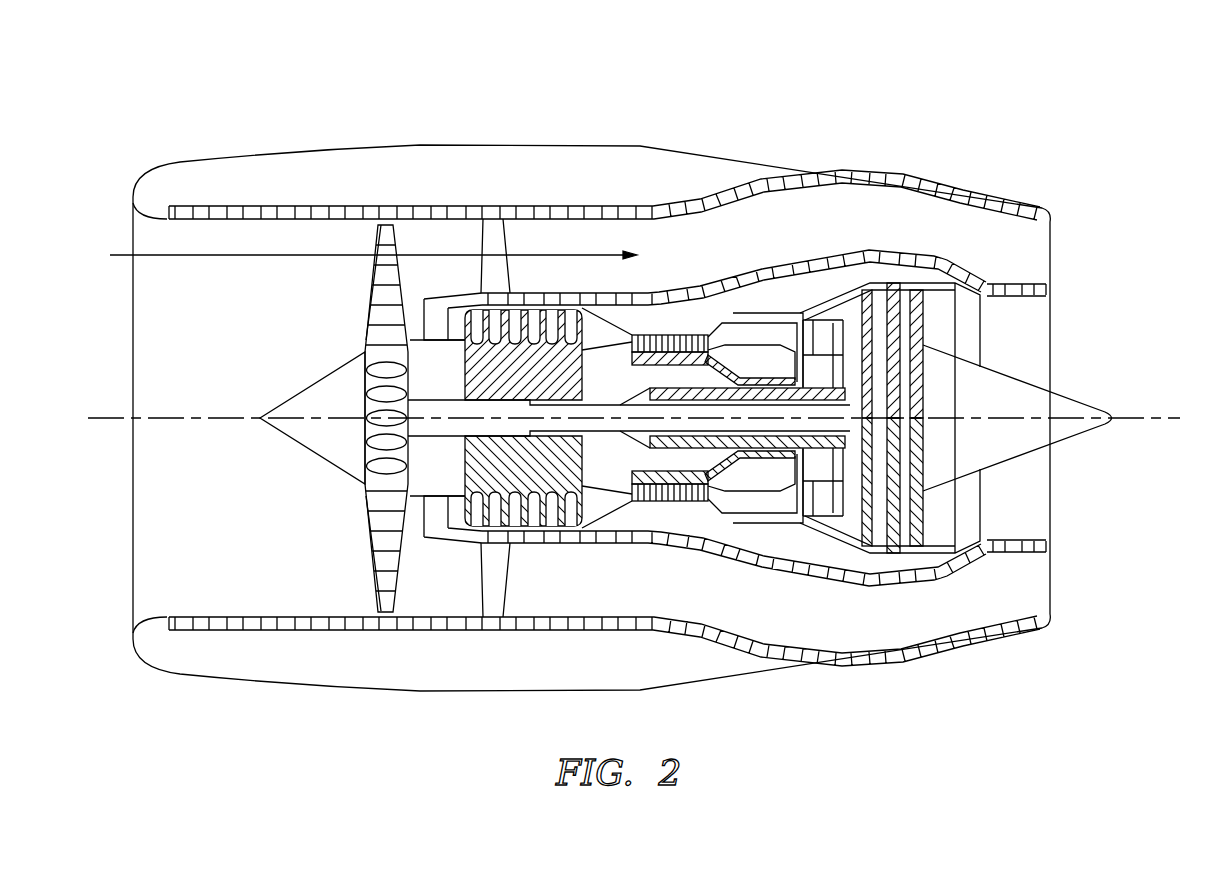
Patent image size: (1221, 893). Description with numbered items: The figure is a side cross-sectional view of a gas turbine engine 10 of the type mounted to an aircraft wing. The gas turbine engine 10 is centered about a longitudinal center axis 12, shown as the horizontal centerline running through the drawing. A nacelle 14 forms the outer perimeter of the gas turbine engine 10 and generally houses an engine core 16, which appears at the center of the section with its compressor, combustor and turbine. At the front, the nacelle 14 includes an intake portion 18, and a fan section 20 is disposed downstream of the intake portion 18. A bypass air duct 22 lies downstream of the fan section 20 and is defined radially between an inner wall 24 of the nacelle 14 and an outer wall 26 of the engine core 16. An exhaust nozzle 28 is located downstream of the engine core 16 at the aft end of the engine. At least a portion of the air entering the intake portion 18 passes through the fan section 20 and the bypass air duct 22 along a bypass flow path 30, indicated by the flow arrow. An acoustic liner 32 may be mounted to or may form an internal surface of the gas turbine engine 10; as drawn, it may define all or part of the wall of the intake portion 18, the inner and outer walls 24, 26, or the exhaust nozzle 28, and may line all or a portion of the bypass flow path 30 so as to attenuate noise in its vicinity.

The gas turbine engine 10 is at (933, 108).
The longitudinal center axis 12 is at (1173, 420).
The nacelle 14 is at (428, 158).
The engine core 16 is at (697, 512).
The intake portion 18 is at (160, 597).
The fan section 20 is at (405, 575).
The bypass air duct 22 is at (836, 226).
The inner wall 24 is at (282, 210).
The outer wall 26 is at (700, 287).
The exhaust nozzle 28 is at (1060, 496).
The bypass flow path 30 is at (305, 258).
The acoustic liner 32 is at (672, 268).